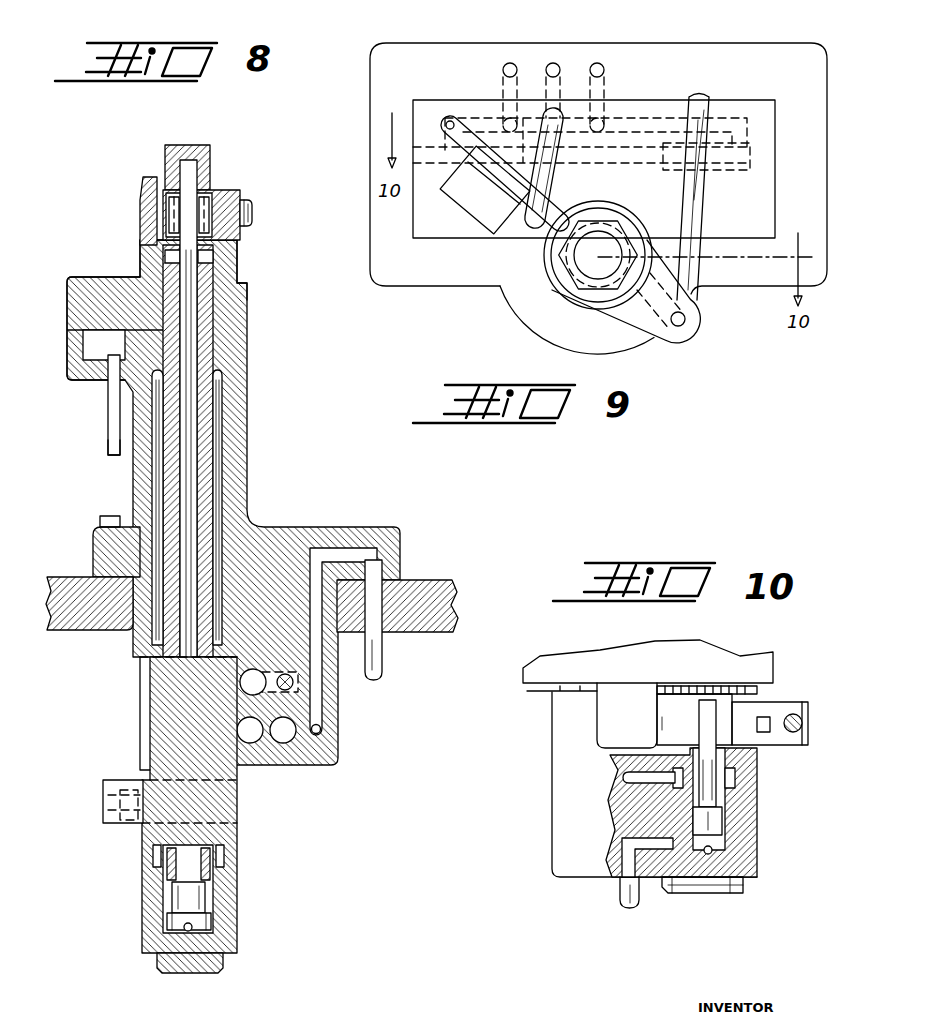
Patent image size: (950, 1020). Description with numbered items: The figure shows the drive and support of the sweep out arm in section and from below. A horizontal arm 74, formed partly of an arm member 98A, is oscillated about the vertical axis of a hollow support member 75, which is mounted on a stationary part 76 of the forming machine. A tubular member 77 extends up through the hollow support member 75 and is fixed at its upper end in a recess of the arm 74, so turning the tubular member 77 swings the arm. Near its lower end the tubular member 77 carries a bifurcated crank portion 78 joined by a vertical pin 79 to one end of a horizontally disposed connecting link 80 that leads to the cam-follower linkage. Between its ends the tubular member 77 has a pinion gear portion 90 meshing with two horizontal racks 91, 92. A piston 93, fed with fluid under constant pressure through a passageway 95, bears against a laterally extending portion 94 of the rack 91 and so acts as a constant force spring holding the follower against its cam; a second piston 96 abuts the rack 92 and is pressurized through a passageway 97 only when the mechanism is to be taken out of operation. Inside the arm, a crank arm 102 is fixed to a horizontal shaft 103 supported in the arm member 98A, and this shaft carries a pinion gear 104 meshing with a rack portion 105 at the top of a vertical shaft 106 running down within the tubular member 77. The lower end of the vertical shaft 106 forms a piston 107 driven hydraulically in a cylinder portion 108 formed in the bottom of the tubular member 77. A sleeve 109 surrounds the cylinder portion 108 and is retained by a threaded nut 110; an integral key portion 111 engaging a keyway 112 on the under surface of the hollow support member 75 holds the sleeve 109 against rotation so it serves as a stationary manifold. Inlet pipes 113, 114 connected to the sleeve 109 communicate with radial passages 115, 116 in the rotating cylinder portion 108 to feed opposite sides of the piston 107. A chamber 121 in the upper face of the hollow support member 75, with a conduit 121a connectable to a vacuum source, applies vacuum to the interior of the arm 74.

In FIG. 8, the horizontal arm 74 is at (242, 262).
In FIG. 8, the hollow support member 75 is at (240, 442).
In FIG. 8, the stationary part 76 is at (437, 590).
In FIG. 8, the tubular member 77 is at (205, 404).
In FIG. 9, the tubular member 77 is at (596, 270).
In FIG. 8, the bifurcated crank portion 78 is at (112, 792).
In FIG. 9, the bifurcated crank portion 78 is at (650, 312).
In FIG. 10, the bifurcated crank portion 78 is at (790, 714).
In FIG. 8, the vertical pin 79 is at (125, 824).
In FIG. 9, the vertical pin 79 is at (686, 321).
In FIG. 9, the connecting link 80 is at (706, 112).
In FIG. 10, the connecting link 80 is at (800, 746).
In FIG. 8, the pinion gear portion 90 is at (150, 700).
In FIG. 10, the pinion gear portion 90 is at (757, 692).
In FIG. 8, the rack 91 is at (247, 672).
In FIG. 8, the rack 92 is at (252, 742).
In FIG. 8, the piston 93 is at (292, 690).
In FIG. 8, the laterally extending portion 94 is at (292, 680).
In FIG. 9, the passageway 95 is at (515, 67).
In FIG. 8, the piston 96 is at (287, 742).
In FIG. 8, the passageway 97 is at (385, 669).
In FIG. 9, the passageway 97 is at (602, 68).
In FIG. 8, the arm member 98A is at (85, 290).
In FIG. 8, the crank arm 102 is at (147, 185).
In FIG. 8, the horizontal shaft 103 is at (253, 211).
In FIG. 8, the pinion gear 104 is at (190, 205).
In FIG. 8, the rack portion 105 is at (208, 148).
In FIG. 8, the vertical shaft 106 is at (185, 350).
In FIG. 10, the vertical shaft 106 is at (712, 795).
In FIG. 8, the piston 107 is at (196, 902).
In FIG. 10, the piston 107 is at (708, 824).
In FIG. 8, the cylinder portion 108 is at (208, 862).
In FIG. 10, the cylinder portion 108 is at (680, 820).
In FIG. 8, the sleeve 109 is at (226, 927).
In FIG. 8, the threaded nut 110 is at (226, 962).
In FIG. 9, the threaded nut 110 is at (572, 268).
In FIG. 10, the threaded nut 110 is at (752, 892).
In FIG. 9, the key portion 111 is at (465, 218).
In FIG. 10, the key portion 111 is at (566, 723).
In FIG. 9, the keyway 112 is at (450, 172).
In FIG. 10, the keyway 112 is at (547, 692).
In FIG. 10, the inlet pipe 113 is at (612, 790).
In FIG. 9, the inlet pipe 114 is at (560, 67).
In FIG. 10, the inlet pipe 114 is at (628, 897).
In FIG. 8, the radial passages 115 is at (160, 858).
In FIG. 10, the radial passages 115 is at (685, 773).
In FIG. 8, the radial passages 116 is at (192, 932).
In FIG. 10, the radial passages 116 is at (712, 855).
In FIG. 8, the chamber 121 is at (100, 370).
In FIG. 8, the conduit 121a is at (110, 447).